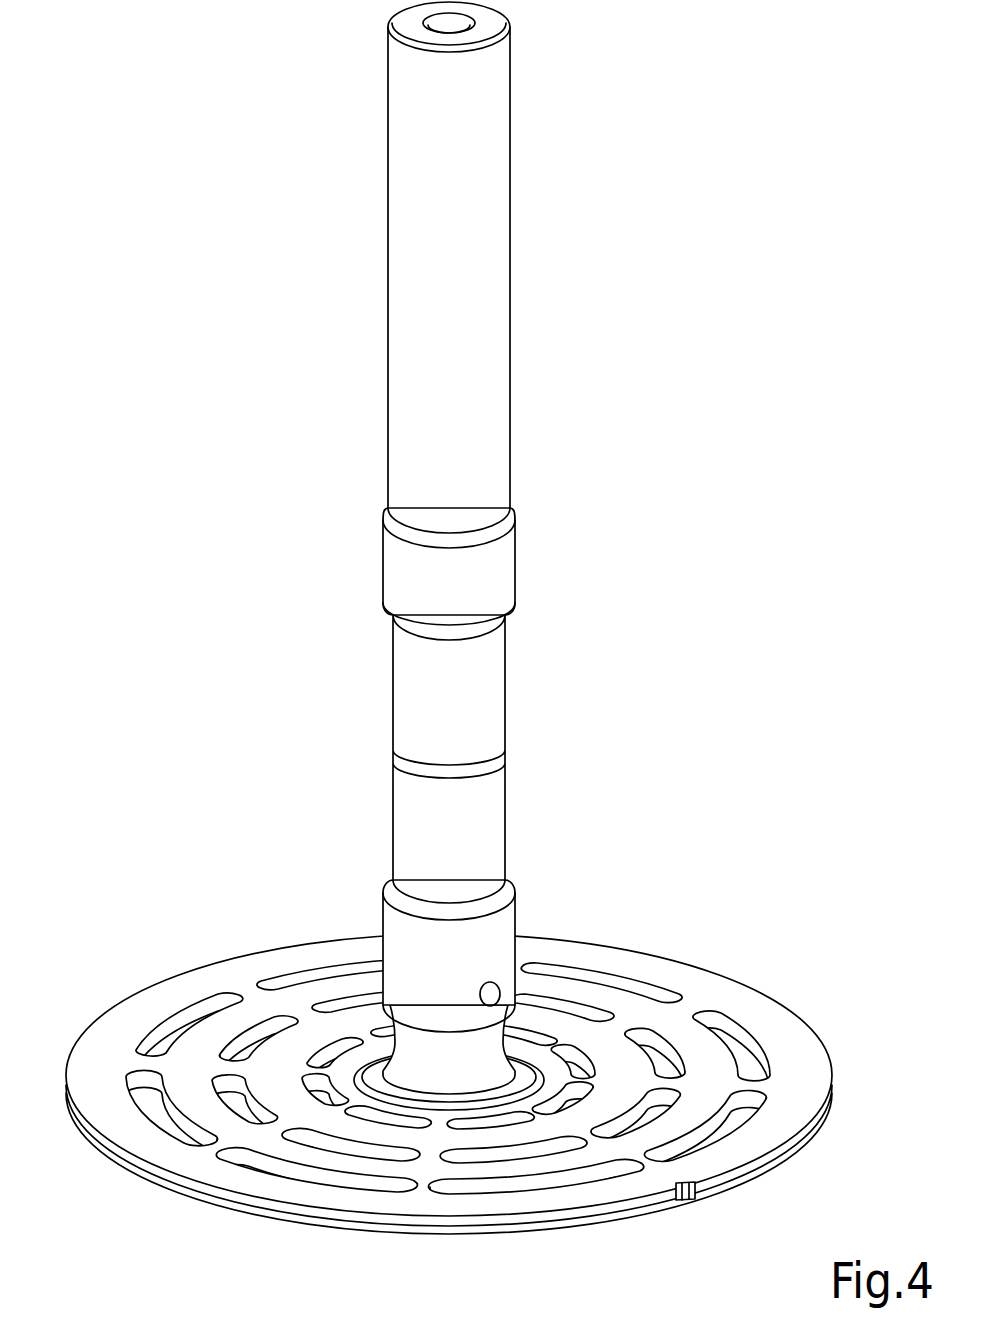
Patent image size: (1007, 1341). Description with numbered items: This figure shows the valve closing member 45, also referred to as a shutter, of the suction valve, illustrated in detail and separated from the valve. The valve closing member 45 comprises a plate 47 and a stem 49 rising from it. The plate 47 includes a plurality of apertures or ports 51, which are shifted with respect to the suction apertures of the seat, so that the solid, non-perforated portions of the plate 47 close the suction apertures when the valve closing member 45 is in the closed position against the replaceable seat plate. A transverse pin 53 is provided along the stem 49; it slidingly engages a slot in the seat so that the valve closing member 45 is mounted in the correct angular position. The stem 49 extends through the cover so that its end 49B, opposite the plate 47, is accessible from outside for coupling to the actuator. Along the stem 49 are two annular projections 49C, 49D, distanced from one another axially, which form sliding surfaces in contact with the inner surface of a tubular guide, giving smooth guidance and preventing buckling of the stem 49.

The valve closing member 45 is at (477, 618).
The plate 47 is at (477, 1068).
The stem 49 is at (525, 548).
The end of the stem 49B is at (498, 38).
The annular projection 49C is at (503, 582).
The annular projection 49D is at (525, 956).
The apertures or ports 51 is at (762, 1032).
The transverse pin 53 is at (500, 995).